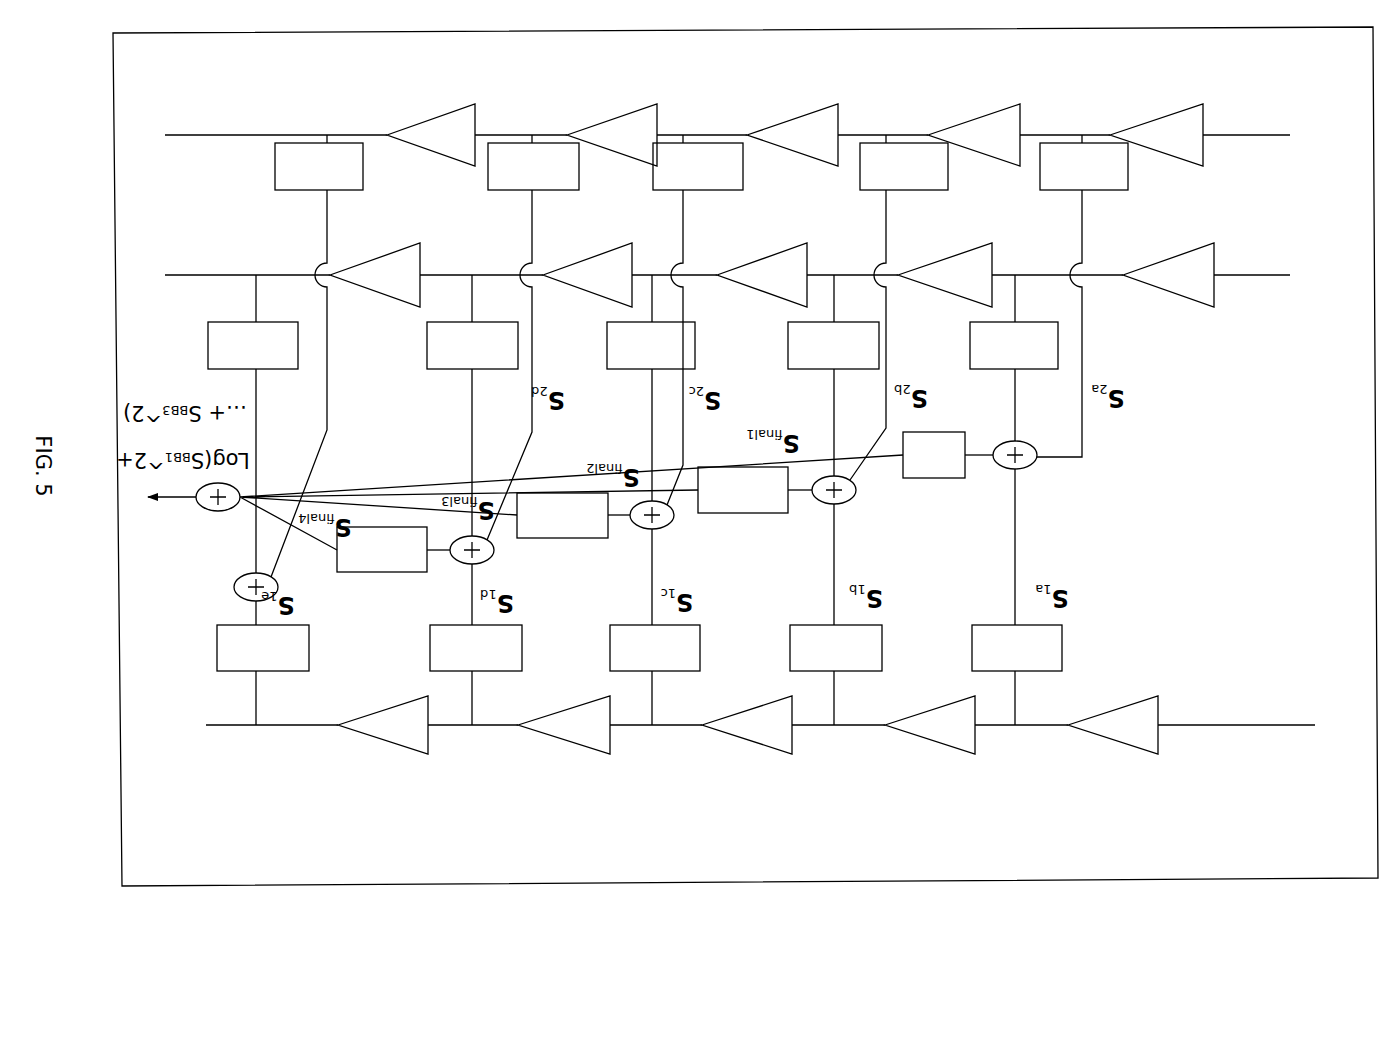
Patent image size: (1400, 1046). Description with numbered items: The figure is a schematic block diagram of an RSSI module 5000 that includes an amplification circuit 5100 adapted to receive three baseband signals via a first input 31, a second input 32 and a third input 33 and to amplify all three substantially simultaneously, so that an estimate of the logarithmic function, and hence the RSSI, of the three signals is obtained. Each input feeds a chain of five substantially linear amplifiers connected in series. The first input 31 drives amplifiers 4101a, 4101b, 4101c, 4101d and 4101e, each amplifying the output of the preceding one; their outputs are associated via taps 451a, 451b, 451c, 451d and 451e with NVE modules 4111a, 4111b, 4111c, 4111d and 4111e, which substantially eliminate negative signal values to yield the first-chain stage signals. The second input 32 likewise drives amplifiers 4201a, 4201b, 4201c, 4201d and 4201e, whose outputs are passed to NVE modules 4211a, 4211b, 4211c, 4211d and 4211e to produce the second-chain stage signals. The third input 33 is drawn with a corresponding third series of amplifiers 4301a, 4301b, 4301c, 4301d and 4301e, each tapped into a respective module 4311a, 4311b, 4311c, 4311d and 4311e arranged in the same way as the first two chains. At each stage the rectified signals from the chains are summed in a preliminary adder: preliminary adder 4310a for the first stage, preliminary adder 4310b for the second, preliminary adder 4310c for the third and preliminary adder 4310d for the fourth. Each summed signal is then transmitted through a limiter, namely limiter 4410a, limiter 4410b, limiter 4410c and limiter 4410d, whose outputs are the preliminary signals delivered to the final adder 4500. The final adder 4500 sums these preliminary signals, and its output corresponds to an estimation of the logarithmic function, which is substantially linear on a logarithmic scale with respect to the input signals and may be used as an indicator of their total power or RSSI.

The input 31 is at (1249, 735).
The input 32 is at (1268, 284).
The input 33 is at (1262, 147).
The amplifier 4101a is at (1102, 740).
The amplifier 4101b is at (919, 740).
The amplifier 4101c is at (736, 740).
The amplifier 4101d is at (552, 740).
The amplifier 4101e is at (372, 740).
The NVE module 4111a is at (1065, 651).
The NVE module 4111b is at (885, 651).
The NVE module 4111c is at (703, 651).
The NVE module 4111d is at (525, 651).
The NVE module 4111e is at (312, 651).
The amplifier 4201a is at (1138, 266).
The amplifier 4201b is at (913, 266).
The amplifier 4201c is at (732, 266).
The amplifier 4201d is at (558, 266).
The amplifier 4201e is at (345, 266).
The NVE module 4211a is at (1061, 360).
The NVE module 4211b is at (882, 360).
The NVE module 4211c is at (698, 360).
The NVE module 4211d is at (521, 360).
The NVE module 4211e is at (301, 360).
The amplifier 4301a is at (1130, 124).
The amplifier 4301b is at (948, 124).
The amplifier 4301c is at (767, 124).
The amplifier 4301d is at (587, 124).
The amplifier 4301e is at (407, 124).
The nonlinear voltage element (NVE) 4311a is at (1127, 191).
The nonlinear voltage element (NVE) 4311b is at (947, 191).
The nonlinear voltage element (NVE) 4311c is at (742, 191).
The nonlinear voltage element (NVE) 4311d is at (578, 191).
The nonlinear voltage element (NVE) 4311e is at (366, 191).
The tap 451a is at (1019, 704).
The tap 451b is at (838, 704).
The tap 451c is at (656, 704).
The tap 451d is at (476, 704).
The tap 451e is at (260, 704).
The preliminary adder 4310a is at (1039, 458).
The preliminary adder 4310b is at (858, 493).
The preliminary adder 4310c is at (676, 519).
The preliminary adder 4310d is at (496, 554).
The limiter 4410a is at (926, 480).
The limiter 4410b is at (721, 515).
The limiter 4410c is at (541, 542).
The limiter 4410d is at (361, 576).
The final adder 4500 is at (215, 512).
The RSSI module 5000 is at (853, 882).
The circuit 5100 is at (1130, 792).